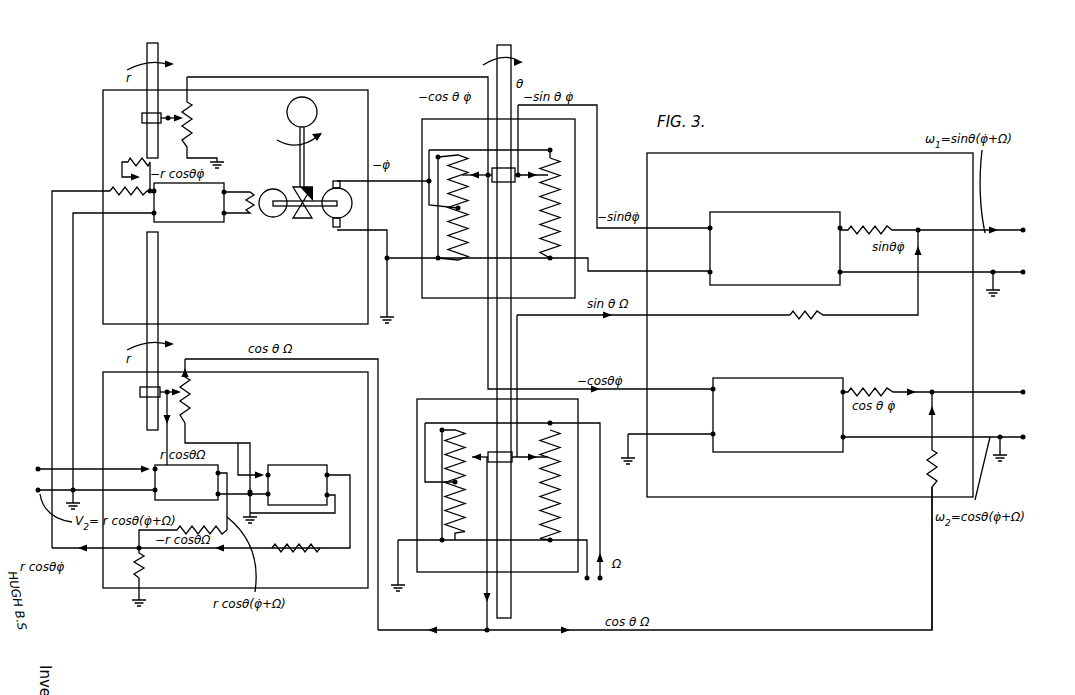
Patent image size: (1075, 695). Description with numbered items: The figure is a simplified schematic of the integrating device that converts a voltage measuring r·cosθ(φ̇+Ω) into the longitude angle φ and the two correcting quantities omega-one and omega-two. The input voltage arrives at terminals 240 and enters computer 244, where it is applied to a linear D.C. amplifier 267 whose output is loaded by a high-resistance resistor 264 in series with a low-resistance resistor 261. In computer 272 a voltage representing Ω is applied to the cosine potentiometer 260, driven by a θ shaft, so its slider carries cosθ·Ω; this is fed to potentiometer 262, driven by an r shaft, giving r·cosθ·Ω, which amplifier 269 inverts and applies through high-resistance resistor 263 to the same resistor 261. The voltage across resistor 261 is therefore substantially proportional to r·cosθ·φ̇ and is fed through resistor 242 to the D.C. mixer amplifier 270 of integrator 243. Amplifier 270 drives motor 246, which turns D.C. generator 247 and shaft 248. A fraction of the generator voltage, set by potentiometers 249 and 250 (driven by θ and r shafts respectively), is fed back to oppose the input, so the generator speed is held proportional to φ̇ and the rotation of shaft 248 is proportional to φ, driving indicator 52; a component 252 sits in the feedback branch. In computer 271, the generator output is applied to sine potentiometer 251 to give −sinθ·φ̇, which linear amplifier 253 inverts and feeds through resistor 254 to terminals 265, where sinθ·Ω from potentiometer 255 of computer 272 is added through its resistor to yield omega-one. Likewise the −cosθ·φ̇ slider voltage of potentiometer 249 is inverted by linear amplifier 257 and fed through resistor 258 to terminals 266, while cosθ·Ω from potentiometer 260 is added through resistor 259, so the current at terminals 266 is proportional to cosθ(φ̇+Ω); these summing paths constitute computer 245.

The indicator 52 is at (302, 121).
The terminals 240 is at (80, 460).
The resistor 242 is at (103, 367).
The integrator 243 is at (235, 207).
The computer 244 is at (235, 480).
The computer 245 is at (810, 325).
The motor 246 is at (270, 217).
The D.C. generator 247 is at (352, 205).
The shaft 248 is at (287, 172).
The potentiometer 249 is at (498, 208).
The potentiometer 250 is at (184, 122).
The potentiometer 251 is at (545, 221).
The resistor 252 is at (127, 167).
The linear D.C. amplifier 253 is at (775, 248).
The resistor 254 is at (931, 219).
The potentiometer 255 is at (717, 396).
The linear D.C. amplifier 257 is at (778, 415).
The resistor 258 is at (933, 381).
The resistor 259 is at (946, 511).
The potentiometer 260 is at (449, 498).
The low-resistance resistor 261 is at (155, 577).
The potentiometer 262 is at (182, 412).
The high-resistance resistor 263 is at (296, 537).
The high-resistance resistor 264 is at (183, 510).
The terminals 265 is at (1011, 221).
The terminals 266 is at (809, 485).
The linear D.C. amplifier 267 is at (187, 482).
The amplifier 269 is at (298, 485).
The D.C. amplifier 270 is at (203, 202).
The computer 271 is at (546, 289).
The computer 272 is at (497, 485).